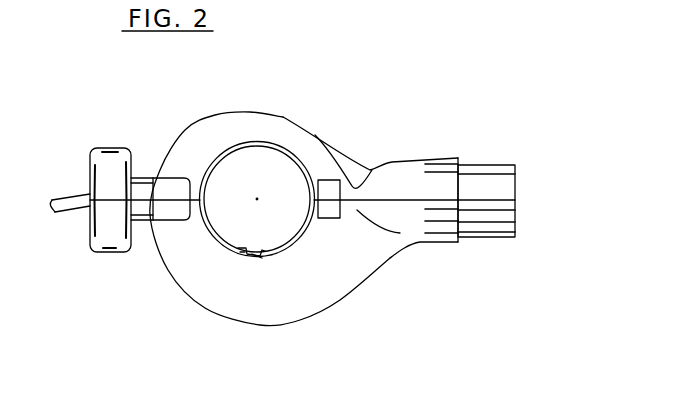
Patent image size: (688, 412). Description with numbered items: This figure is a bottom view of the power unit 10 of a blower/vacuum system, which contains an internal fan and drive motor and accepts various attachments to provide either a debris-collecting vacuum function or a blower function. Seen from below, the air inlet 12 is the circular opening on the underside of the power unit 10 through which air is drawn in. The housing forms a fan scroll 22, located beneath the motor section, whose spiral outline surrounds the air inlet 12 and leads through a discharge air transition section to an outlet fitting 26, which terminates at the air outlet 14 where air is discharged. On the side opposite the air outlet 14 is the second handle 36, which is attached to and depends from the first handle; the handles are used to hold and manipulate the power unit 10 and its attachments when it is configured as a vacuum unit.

The power unit 10 is at (422, 98).
The air inlet 12 is at (252, 175).
The air outlet 14 is at (517, 207).
The fan scroll 22 is at (300, 320).
The outlet fitting 26 is at (490, 165).
The second handle 36 is at (104, 148).